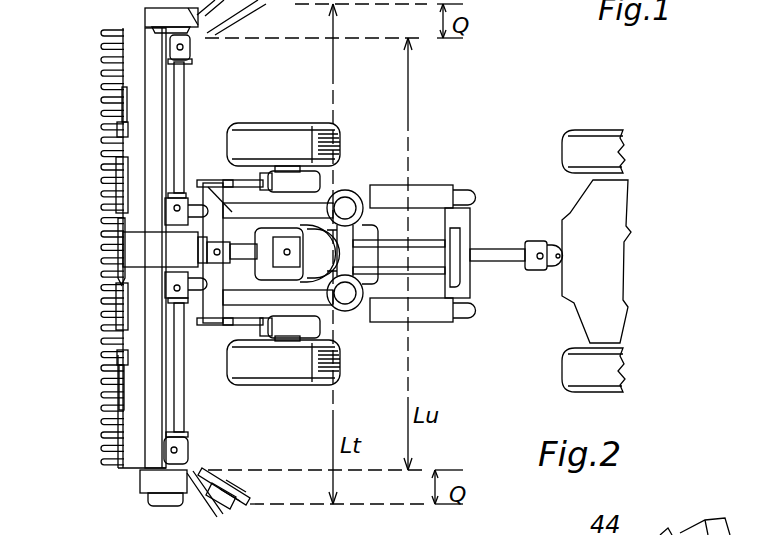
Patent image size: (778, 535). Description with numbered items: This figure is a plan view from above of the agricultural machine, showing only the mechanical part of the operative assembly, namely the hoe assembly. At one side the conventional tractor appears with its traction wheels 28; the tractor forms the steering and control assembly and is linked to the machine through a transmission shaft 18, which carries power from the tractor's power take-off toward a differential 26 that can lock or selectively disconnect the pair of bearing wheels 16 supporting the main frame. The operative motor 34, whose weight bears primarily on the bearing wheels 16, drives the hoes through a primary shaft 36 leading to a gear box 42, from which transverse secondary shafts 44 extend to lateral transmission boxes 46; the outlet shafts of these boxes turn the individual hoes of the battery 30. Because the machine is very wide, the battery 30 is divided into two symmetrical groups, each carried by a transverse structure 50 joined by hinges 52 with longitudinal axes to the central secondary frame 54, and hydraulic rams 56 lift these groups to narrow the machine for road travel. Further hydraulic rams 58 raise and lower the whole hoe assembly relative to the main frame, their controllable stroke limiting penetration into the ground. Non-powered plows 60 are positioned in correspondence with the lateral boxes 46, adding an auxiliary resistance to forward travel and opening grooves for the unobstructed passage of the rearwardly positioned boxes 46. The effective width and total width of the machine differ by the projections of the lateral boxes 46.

The bearing wheels 16 is at (252, 142).
The transmission shaft 18 is at (503, 247).
The differential 26 is at (300, 282).
The traction wheels 28 is at (583, 143).
The battery of hoes 30 is at (92, 457).
The operative motor 34 is at (418, 176).
The primary shaft 36 is at (242, 248).
The gear box 42 is at (145, 243).
The transverse secondary shafts 44 is at (187, 80).
The lateral transmission boxes 46 is at (150, 5).
The transverse structures 50 is at (157, 62).
The hinges 52 is at (123, 140).
The secondary frame 54 is at (222, 118).
The hydraulic rams 56 is at (120, 183).
The hydraulic rams 58 is at (327, 177).
The non-powered plows 60 is at (238, 498).